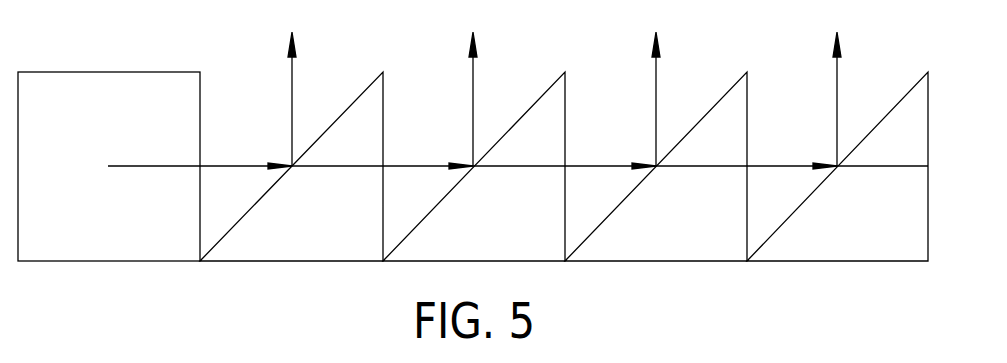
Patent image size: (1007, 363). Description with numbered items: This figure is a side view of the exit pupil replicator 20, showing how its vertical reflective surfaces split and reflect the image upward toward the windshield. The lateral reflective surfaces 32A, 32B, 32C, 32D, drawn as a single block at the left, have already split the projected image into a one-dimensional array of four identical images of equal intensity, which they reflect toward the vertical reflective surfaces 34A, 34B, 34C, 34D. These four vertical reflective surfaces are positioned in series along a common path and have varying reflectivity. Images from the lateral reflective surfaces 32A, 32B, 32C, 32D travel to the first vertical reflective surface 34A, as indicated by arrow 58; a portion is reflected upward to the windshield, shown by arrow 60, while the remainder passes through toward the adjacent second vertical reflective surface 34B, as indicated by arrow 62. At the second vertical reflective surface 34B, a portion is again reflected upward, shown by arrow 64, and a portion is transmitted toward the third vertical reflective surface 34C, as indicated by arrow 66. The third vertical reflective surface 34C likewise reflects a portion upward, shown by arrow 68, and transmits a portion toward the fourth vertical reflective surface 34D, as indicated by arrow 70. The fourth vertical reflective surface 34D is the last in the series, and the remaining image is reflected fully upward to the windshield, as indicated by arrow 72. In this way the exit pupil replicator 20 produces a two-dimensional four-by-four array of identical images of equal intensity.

The exit pupil replicator 20 is at (333, 283).
The first lateral reflective surface 32A is at (148, 187).
The second lateral reflective surface 32B is at (109, 166).
The third lateral reflective surface 32C is at (109, 166).
The fourth lateral reflective surface 32D is at (58, 230).
The first vertical reflective surface 34A is at (337, 226).
The second vertical reflective surface 34B is at (519, 226).
The third vertical reflective surface 34C is at (702, 226).
The fourth vertical reflective surface 34D is at (884, 226).
The arrow 58 is at (257, 165).
The arrow 60 is at (291, 85).
The arrow 62 is at (438, 165).
The arrow 64 is at (472, 85).
The arrow 66 is at (621, 165).
The arrow 68 is at (655, 85).
The arrow 70 is at (802, 165).
The arrow 72 is at (836, 85).